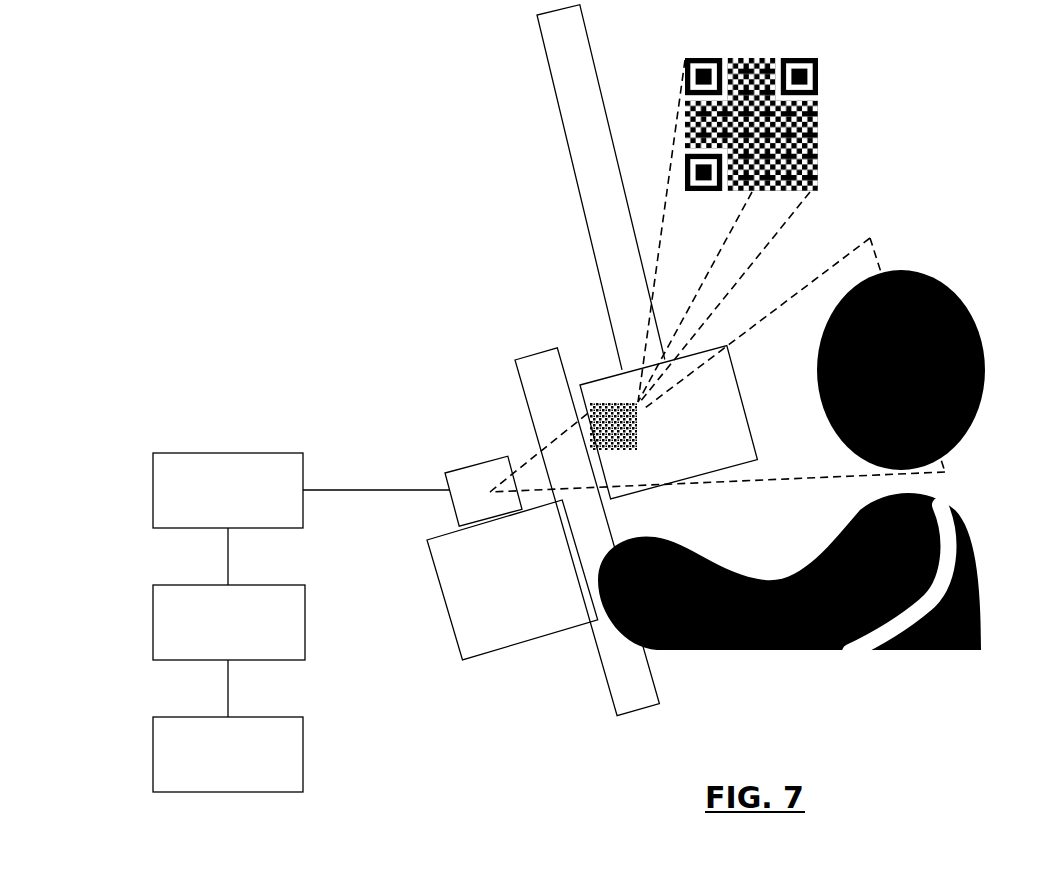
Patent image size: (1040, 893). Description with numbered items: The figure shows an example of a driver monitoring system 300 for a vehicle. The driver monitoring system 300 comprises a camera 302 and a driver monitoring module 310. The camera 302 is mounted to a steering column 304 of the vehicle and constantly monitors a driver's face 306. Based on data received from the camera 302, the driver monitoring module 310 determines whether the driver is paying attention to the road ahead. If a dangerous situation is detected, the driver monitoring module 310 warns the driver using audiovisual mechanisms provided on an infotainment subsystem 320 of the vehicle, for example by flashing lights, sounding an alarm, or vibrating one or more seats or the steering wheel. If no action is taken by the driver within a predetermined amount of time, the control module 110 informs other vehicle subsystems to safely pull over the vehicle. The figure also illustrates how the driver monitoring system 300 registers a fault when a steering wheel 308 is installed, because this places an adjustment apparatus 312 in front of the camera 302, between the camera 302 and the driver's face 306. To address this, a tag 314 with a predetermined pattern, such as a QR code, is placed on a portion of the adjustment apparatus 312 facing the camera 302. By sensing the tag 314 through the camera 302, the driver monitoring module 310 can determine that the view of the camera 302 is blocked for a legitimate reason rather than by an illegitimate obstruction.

The driver monitoring system 300 is at (263, 115).
The camera 302 is at (473, 467).
The steering column 304 is at (450, 637).
The driver's face 306 is at (962, 304).
The steering wheel 308 is at (522, 356).
The driver monitoring module 310 is at (228, 453).
The adjustment apparatus 312 is at (576, 172).
The tag 314 is at (603, 404).
The control module 110 is at (305, 620).
The infotainment subsystem 320 is at (303, 752).